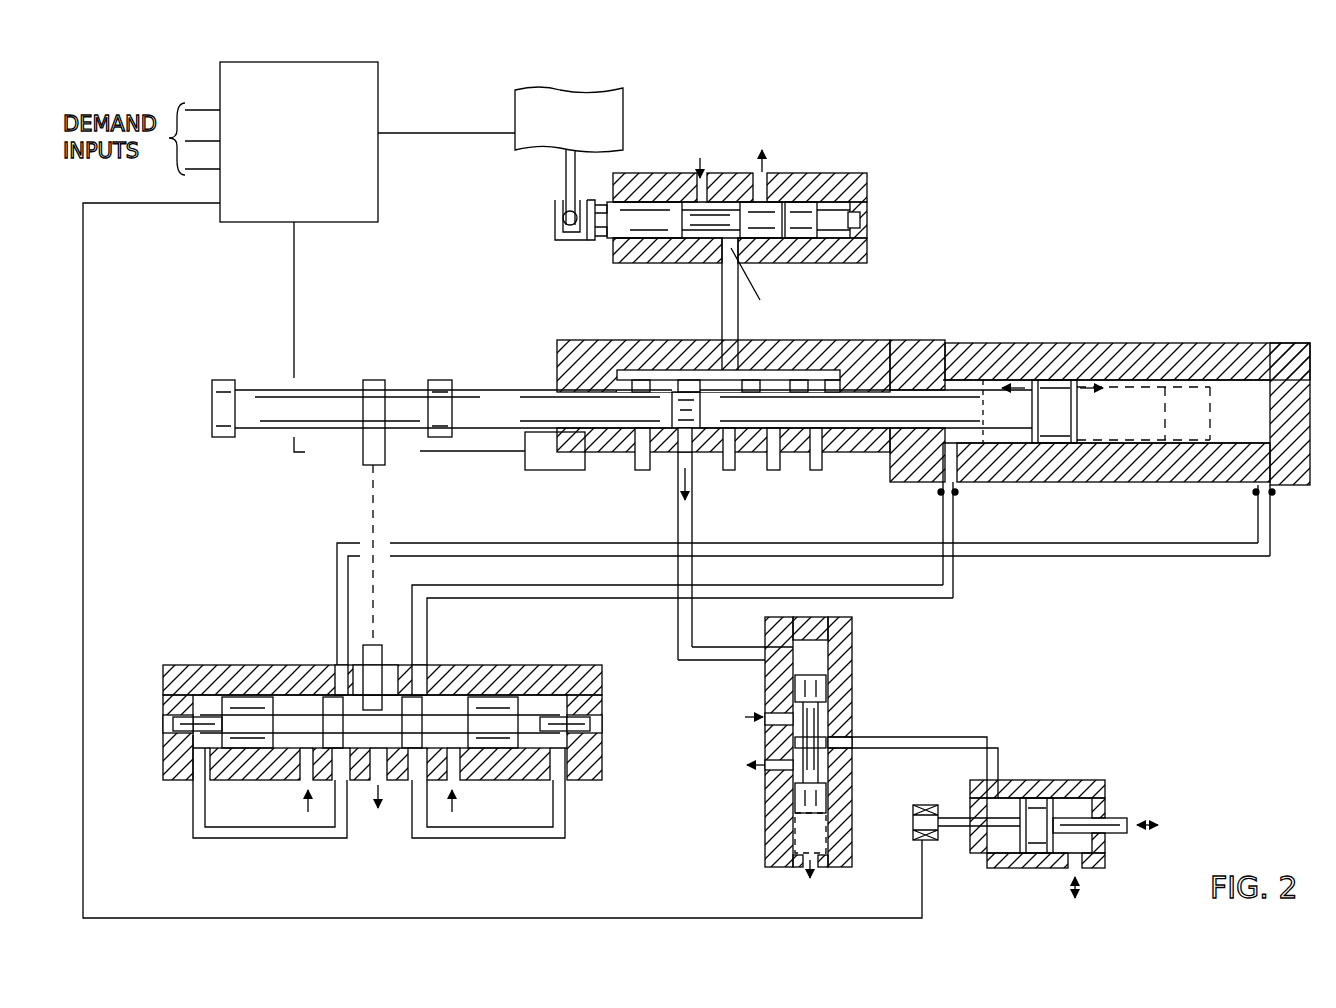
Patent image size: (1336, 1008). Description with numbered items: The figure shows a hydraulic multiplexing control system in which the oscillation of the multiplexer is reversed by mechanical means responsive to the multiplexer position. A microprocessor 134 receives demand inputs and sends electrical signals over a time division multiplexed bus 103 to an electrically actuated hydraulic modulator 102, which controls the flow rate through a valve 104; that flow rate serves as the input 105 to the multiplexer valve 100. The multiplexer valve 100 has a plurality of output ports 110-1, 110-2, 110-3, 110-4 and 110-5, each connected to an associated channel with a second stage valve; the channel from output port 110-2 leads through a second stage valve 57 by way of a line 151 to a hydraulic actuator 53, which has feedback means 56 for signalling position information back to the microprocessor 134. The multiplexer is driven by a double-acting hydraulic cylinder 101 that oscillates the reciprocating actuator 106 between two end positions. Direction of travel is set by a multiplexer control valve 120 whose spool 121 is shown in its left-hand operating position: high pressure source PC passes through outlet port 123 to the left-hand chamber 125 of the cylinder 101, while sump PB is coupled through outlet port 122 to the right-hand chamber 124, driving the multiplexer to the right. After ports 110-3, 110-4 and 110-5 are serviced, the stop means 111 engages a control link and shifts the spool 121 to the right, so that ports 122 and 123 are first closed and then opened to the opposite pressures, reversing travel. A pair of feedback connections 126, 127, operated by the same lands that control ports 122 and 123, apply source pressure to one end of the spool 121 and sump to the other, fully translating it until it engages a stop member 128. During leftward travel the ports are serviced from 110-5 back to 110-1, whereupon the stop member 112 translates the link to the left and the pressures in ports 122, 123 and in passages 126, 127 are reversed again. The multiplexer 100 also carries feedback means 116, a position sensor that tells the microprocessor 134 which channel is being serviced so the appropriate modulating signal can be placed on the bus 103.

The microprocessor 134 is at (380, 84).
The time division multiplexed bus 103 is at (440, 133).
The electrically actuated hydraulic modulator 102 is at (900, 133).
The valve 104 is at (868, 192).
The input 105 is at (735, 347).
The multiplexer valve 100 is at (850, 326).
The double-acting hydraulic cylinder 101 is at (1152, 343).
The reciprocating actuator 106 is at (510, 402).
The stop means 111 is at (224, 384).
The stop member 112 is at (444, 383).
The feedback means 116 is at (545, 470).
The output port 110-1 is at (638, 470).
The output port 110-2 is at (694, 462).
The output port 110-3 is at (738, 470).
The output port 110-4 is at (773, 470).
The output port 110-5 is at (816, 470).
The left-hand chamber 125 is at (1013, 378).
The right-hand chamber 124 is at (1243, 390).
The outlet port 122 is at (343, 663).
The outlet port 123 is at (418, 677).
The spool 121 is at (510, 715).
The multiplexer control valve 120 is at (602, 740).
The stop member 128 is at (597, 722).
The feedback connection 126 is at (293, 835).
The feedback connection 127 is at (502, 835).
The pressure line 151 is at (726, 667).
The shutoff valve 57 is at (855, 660).
The hydraulic actuator 53 is at (1080, 790).
The feedback means 56 is at (919, 840).